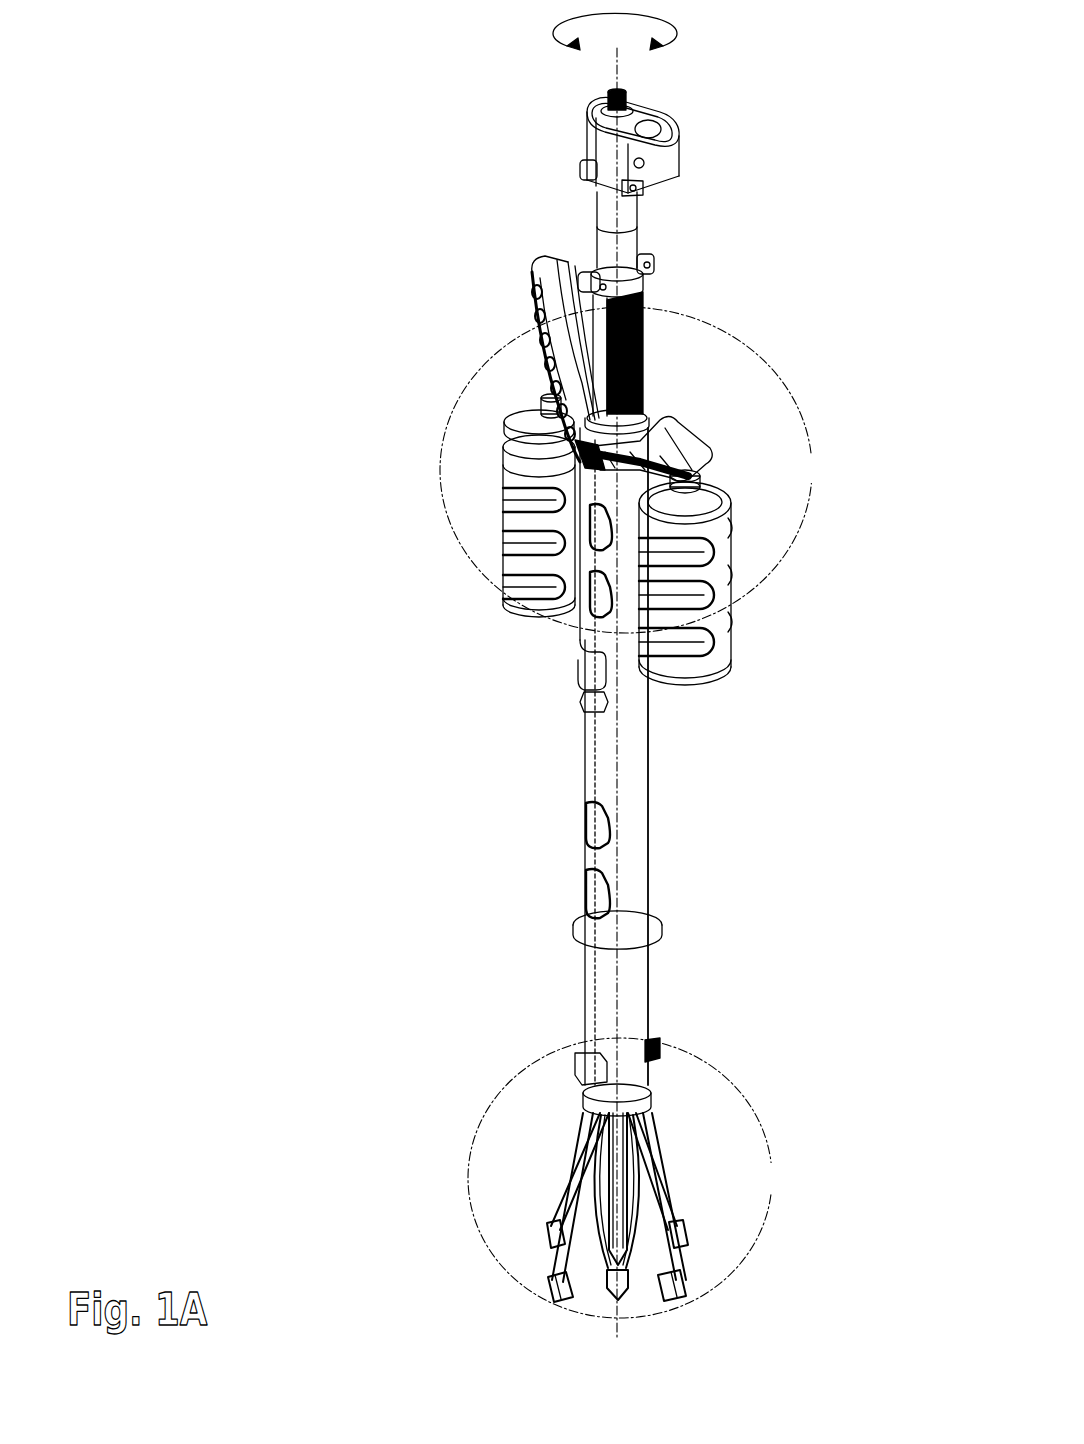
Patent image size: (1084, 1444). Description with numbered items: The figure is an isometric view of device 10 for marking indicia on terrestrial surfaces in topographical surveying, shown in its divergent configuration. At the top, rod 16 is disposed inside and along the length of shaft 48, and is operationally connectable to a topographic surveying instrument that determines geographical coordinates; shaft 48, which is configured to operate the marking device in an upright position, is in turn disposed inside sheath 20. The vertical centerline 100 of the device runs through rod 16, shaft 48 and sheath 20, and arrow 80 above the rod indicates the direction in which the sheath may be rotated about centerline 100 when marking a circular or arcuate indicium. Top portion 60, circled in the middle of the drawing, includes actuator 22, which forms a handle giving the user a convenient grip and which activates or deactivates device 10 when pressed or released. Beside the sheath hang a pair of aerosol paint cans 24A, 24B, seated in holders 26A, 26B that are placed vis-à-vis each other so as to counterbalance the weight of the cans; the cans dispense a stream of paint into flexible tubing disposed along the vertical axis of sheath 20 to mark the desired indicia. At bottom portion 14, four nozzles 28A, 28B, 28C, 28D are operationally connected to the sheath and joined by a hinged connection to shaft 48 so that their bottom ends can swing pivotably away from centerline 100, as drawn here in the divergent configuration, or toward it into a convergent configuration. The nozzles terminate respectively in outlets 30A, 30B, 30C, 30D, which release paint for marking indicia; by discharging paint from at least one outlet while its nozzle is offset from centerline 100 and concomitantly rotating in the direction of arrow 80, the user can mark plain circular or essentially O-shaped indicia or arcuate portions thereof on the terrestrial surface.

The device 10 is at (297, 176).
The bottom portion 14 is at (609, 1210).
The rod 16 is at (640, 101).
The sheath 20 is at (645, 358).
The actuator 22 is at (537, 302).
The aerosol paint can 24A is at (787, 579).
The aerosol paint can 24B is at (472, 555).
The holder 26A is at (688, 593).
The holder 26B is at (550, 572).
The nozzle 28A is at (784, 1247).
The nozzle 28B is at (459, 1223).
The nozzle 28C is at (757, 1145).
The nozzle 28D is at (442, 1245).
The outlet 30A is at (683, 1298).
The outlet 30B is at (548, 1292).
The outlet 30C is at (675, 1228).
The outlet 30D is at (548, 1232).
The shaft 48 is at (628, 210).
The top portion 60 is at (706, 387).
The arrow 80 is at (552, 35).
The centerline 100 is at (619, 70).